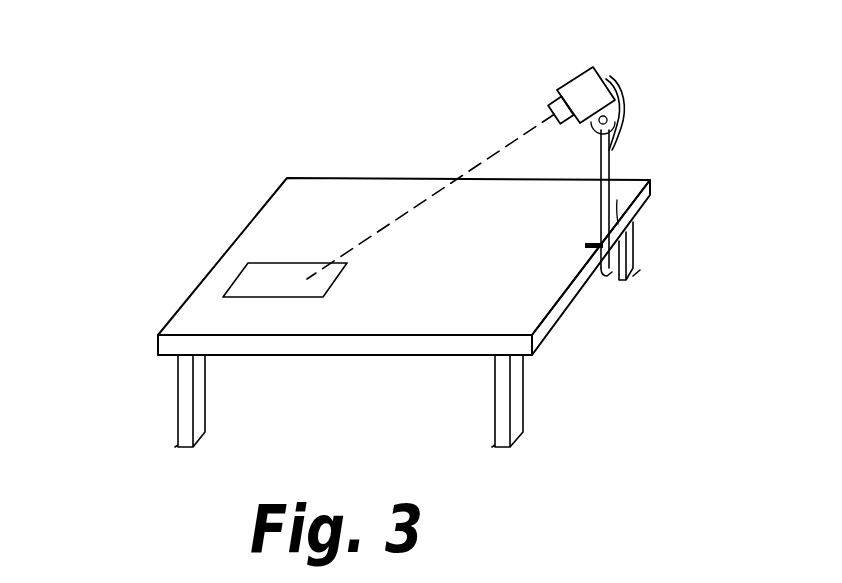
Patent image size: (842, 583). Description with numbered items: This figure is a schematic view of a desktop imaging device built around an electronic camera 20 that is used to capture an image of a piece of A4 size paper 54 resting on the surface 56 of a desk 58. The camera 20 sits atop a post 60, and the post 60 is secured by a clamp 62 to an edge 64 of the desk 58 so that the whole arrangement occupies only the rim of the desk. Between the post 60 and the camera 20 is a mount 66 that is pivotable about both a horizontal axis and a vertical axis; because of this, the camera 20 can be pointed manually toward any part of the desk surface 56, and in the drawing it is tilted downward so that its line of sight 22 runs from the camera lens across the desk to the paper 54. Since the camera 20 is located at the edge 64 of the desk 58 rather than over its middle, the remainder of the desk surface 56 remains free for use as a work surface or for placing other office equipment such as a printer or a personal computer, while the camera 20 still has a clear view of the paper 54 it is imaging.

The electronic camera 20 is at (568, 63).
The optical axis / line of sight 22 is at (507, 148).
The piece of A4 size paper 54 is at (238, 277).
The surface 56 is at (331, 196).
The desk 58 is at (353, 280).
The post 60 is at (610, 163).
The clamp 62 is at (607, 273).
The edge 64 is at (580, 284).
The mount 66 is at (617, 107).